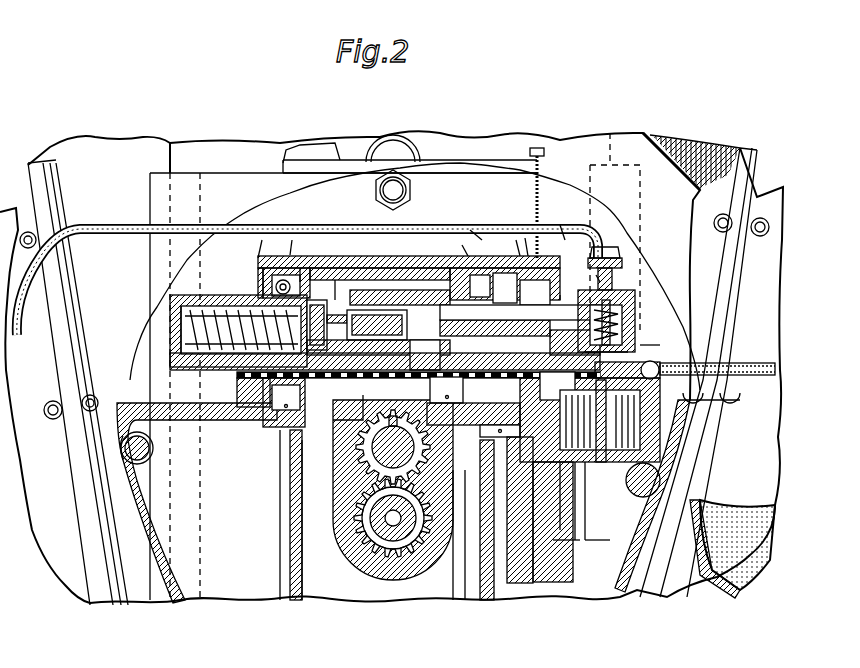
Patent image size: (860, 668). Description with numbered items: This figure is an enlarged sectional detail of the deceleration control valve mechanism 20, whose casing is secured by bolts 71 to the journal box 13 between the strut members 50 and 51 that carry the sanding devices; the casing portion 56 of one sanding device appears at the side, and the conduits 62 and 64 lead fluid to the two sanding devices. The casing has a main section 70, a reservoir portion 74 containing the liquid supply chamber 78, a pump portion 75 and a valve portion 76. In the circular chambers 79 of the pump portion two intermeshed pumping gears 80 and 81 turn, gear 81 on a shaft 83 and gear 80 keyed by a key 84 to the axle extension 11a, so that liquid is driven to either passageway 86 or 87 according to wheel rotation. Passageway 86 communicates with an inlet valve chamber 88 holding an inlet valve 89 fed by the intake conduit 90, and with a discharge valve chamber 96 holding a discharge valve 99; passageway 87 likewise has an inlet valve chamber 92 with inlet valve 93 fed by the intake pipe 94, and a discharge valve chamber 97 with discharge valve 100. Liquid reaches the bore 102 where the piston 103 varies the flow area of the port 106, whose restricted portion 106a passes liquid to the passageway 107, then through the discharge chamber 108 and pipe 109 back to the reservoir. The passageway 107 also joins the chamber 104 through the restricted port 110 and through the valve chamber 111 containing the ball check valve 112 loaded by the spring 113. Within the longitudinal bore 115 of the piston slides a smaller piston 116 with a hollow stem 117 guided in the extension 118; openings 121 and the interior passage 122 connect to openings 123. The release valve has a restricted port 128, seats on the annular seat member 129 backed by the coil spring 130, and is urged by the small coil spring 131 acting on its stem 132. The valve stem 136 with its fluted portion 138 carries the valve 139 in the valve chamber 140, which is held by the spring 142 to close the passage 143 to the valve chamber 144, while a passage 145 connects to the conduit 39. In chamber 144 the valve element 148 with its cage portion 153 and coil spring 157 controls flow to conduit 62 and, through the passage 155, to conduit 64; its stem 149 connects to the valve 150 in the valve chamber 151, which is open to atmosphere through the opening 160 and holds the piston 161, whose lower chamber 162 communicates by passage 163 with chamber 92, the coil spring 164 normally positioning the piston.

The journal box 13 is at (222, 186).
The strut member 50 is at (45, 205).
The strut member 51 is at (748, 198).
The conduit 64 is at (117, 237).
The conduit 39 is at (537, 148).
The main section 70 is at (345, 165).
The bolts 71 is at (400, 188).
The coil spring 130 is at (185, 327).
The deceleration control valve mechanism 20 is at (230, 285).
The small coil spring 131 is at (212, 330).
The stem 132 is at (241, 330).
The release ball check valve 112 is at (265, 282).
The spring 113 is at (281, 278).
The annular seat member 129 is at (300, 268).
The restricted port 128 is at (335, 280).
The piston 103 is at (400, 268).
The valve chamber 111 is at (262, 240).
The restricted port 110 is at (292, 240).
The chamber 104 is at (365, 256).
The bore 102 is at (450, 270).
The passageway 107 is at (470, 230).
The port 106 is at (462, 245).
The restricted portion 106a is at (516, 240).
The hollow stem 117 is at (525, 238).
The discharge chamber 108 is at (560, 225).
The valve portion 76 is at (560, 300).
The passage 145 is at (590, 258).
The passage 155 is at (600, 282).
The fluted portion 138 is at (628, 268).
The valve 139 is at (625, 290).
The coil spring 157 is at (628, 305).
The valve chamber 140 is at (632, 326).
The valve chamber 144 is at (660, 345).
The valve element 148 is at (655, 362).
The conduit 62 is at (748, 365).
The valve stem 136 is at (503, 290).
The spring 142 is at (535, 295).
The smaller piston 116 is at (316, 325).
The longitudinal bore 115 is at (398, 302).
The openings 123 is at (503, 293).
The extension 118 is at (520, 336).
The cage portion 153 is at (560, 342).
The openings 121 is at (378, 357).
The interior passage 122 is at (437, 363).
The passage 143 is at (590, 417).
The discharge valve chamber 96 is at (240, 396).
The discharge valve 99 is at (284, 402).
The discharge valve chamber 97 is at (468, 390).
The discharge valve 100 is at (482, 406).
The pumping gear 80 is at (500, 432).
The inlet valve 89 is at (149, 447).
The inlet valve chamber 88 is at (300, 424).
The key 84 is at (292, 448).
The axle extension 11a is at (292, 472).
The intake conduit 90 is at (290, 516).
The reservoir portion 74 is at (140, 555).
The passageway 86 is at (365, 413).
The circular chambers 79 is at (360, 445).
The passageway 87 is at (478, 520).
The inlet valve chamber 92 is at (540, 450).
The inlet valve 93 is at (559, 501).
The passage 163 is at (546, 496).
The valve chamber 151 is at (593, 501).
The piston 161 is at (600, 462).
The chamber 162 is at (620, 464).
The intake pipe 94 is at (562, 550).
The coil spring 164 is at (592, 550).
The pump portion 75 is at (460, 530).
The pipe 109 is at (478, 582).
The liquid supply chamber 78 is at (362, 592).
The pin or shaft 83 is at (393, 545).
The pumping gear 81 is at (418, 567).
The stem 149 is at (655, 420).
The valve 150 is at (690, 440).
The opening 160 is at (725, 404).
The casing portion 56 is at (732, 549).